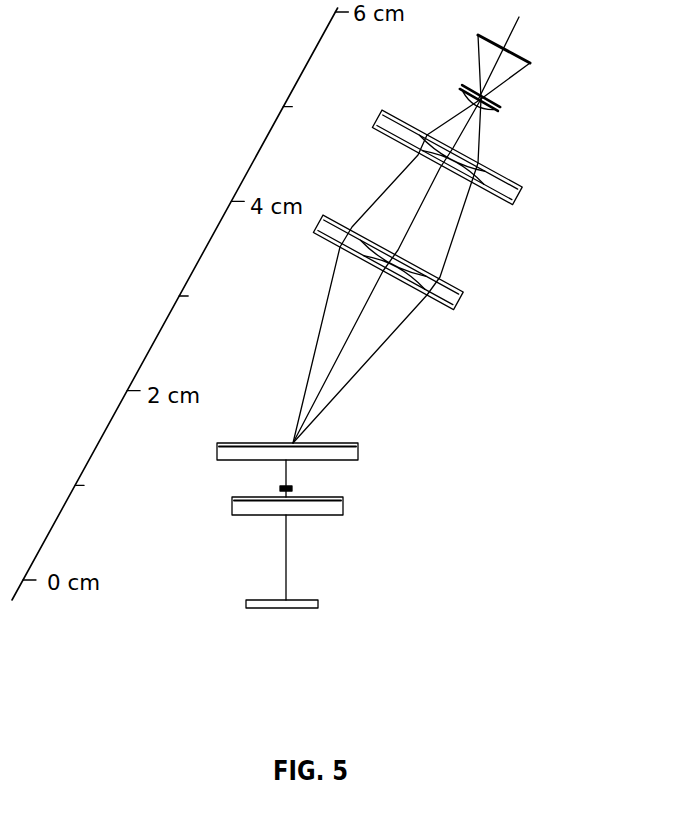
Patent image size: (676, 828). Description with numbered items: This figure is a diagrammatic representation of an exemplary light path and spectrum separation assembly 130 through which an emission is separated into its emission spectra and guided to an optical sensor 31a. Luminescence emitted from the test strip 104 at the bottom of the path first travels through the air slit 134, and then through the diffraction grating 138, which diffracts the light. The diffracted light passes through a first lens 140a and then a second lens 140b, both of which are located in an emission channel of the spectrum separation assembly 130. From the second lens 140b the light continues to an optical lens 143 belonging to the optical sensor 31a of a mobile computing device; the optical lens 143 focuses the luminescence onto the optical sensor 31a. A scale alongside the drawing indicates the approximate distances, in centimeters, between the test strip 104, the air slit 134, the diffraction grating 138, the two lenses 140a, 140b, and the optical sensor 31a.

The optical spectrum separation assembly 130 is at (526, 419).
The optical sensor 31a is at (548, 57).
The optical lens 143 is at (468, 84).
The second lens 140b is at (513, 192).
The first lens 140a is at (458, 297).
The diffraction grating 138 is at (358, 445).
The air slit 134 is at (342, 508).
The test strip 104 is at (313, 608).